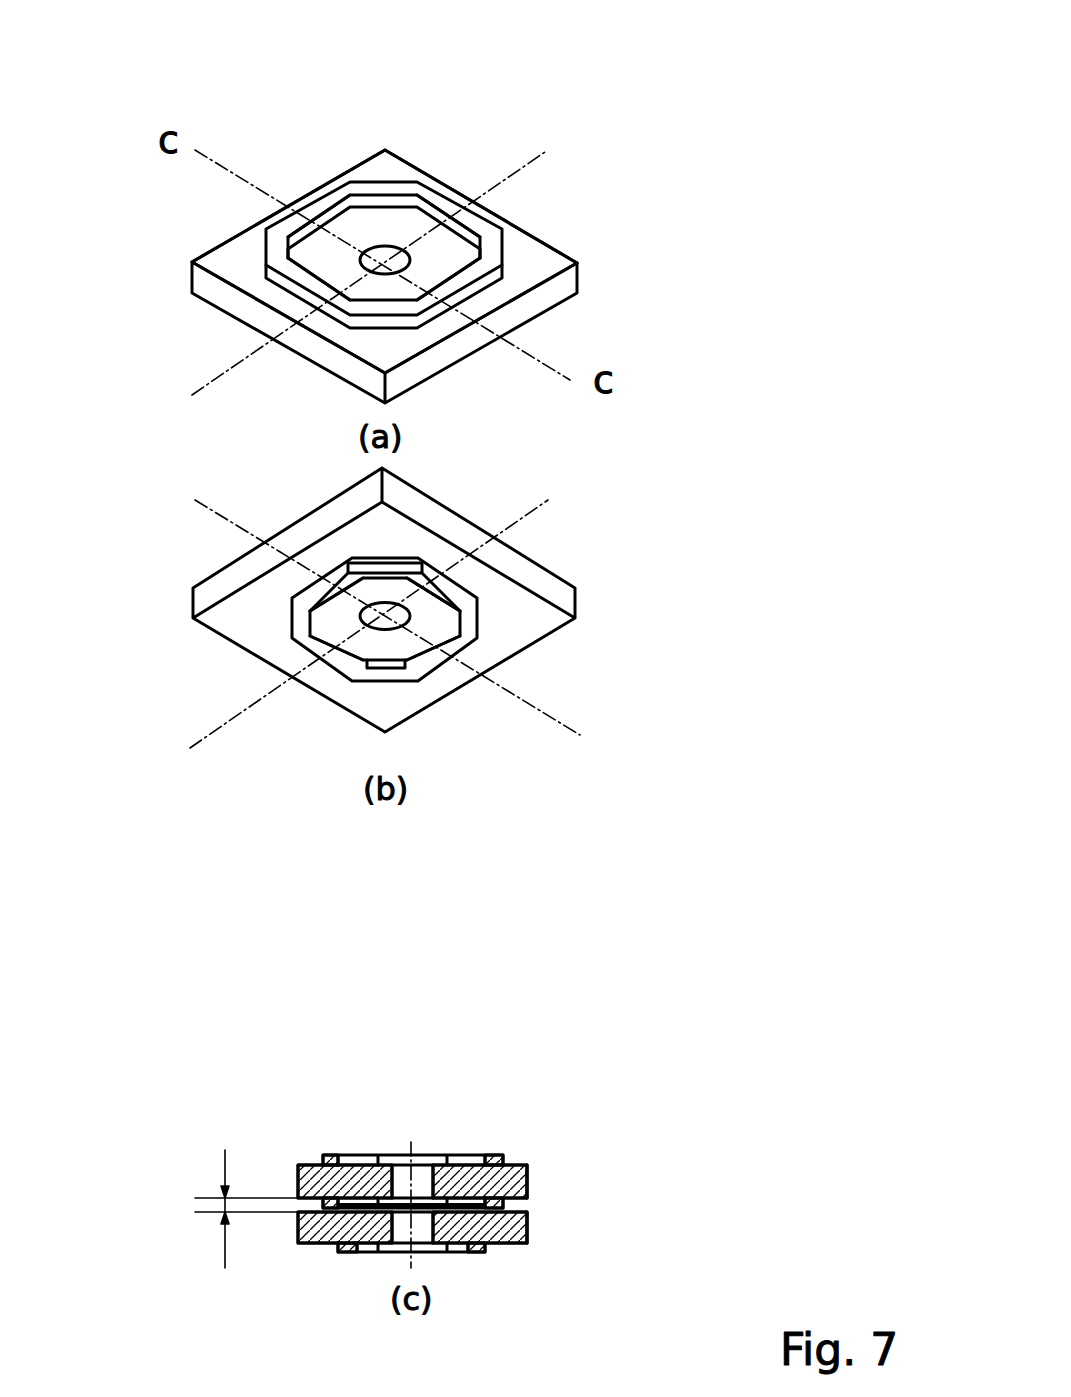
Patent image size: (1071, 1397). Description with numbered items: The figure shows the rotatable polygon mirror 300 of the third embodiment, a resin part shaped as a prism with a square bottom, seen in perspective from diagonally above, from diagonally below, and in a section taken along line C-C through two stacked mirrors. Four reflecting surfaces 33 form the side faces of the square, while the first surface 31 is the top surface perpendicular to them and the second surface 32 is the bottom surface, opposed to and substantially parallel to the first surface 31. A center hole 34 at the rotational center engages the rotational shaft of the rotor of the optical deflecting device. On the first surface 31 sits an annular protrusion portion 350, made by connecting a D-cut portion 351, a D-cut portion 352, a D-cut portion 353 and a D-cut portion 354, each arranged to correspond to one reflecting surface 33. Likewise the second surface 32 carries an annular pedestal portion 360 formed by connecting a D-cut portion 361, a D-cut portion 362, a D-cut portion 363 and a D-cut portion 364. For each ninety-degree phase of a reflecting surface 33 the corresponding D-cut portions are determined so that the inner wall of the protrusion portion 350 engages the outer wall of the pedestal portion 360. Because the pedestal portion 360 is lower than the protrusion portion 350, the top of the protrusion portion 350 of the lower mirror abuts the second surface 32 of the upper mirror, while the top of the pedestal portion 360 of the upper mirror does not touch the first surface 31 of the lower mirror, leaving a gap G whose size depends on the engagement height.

The rotatable polygon mirror 300 is at (488, 30).
The first surface 31 is at (528, 260).
The second surface 32 is at (500, 635).
The reflecting surface 33 is at (530, 305).
The center hole 34 is at (385, 258).
The protrusion portion 350 is at (328, 203).
The D-cut portion 351 is at (446, 197).
The D-cut portion 352 is at (440, 307).
The D-cut portion 353 is at (323, 310).
The D-cut portion 354 is at (283, 217).
The pedestal portion 360 is at (405, 684).
The D-cut portion 361 is at (465, 577).
The D-cut portion 362 is at (440, 668).
The D-cut portion 363 is at (300, 648).
The D-cut portion 364 is at (292, 580).
The gap G is at (247, 1189).